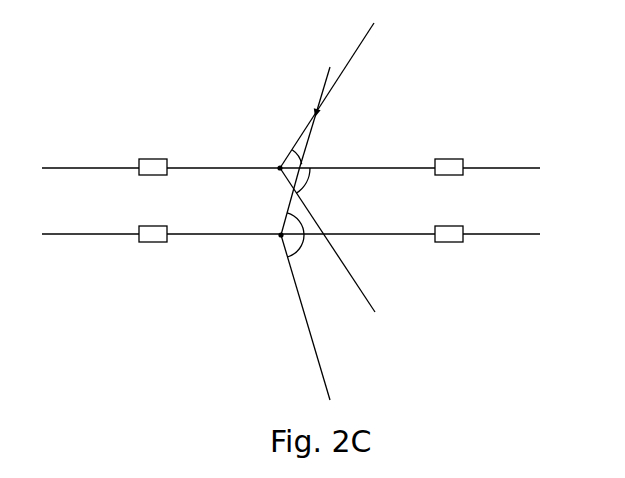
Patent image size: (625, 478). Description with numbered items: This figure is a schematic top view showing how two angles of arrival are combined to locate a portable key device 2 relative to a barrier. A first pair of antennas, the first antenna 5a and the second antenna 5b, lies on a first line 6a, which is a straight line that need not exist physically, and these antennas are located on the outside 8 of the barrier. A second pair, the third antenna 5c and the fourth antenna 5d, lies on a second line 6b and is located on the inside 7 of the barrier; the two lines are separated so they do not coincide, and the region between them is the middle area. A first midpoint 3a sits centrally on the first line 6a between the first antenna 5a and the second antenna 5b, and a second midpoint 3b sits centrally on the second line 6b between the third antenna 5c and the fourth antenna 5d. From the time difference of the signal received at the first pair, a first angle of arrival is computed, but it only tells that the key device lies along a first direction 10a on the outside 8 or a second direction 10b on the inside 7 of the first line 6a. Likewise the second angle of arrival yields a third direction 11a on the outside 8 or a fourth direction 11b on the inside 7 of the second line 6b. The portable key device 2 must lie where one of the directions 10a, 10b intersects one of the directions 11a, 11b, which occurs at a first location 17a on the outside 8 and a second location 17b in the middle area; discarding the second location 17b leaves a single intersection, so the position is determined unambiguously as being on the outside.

The portable key device 2 is at (320, 113).
The first midpoint 3a is at (277, 166).
The second midpoint 3b is at (280, 238).
The first antenna 5a is at (152, 158).
The second antenna 5b is at (449, 158).
The third antenna 5c is at (152, 243).
The fourth antenna 5d is at (449, 243).
The first line 6a is at (511, 167).
The second line 6b is at (514, 235).
The inside 7 is at (516, 335).
The outside 8 is at (509, 25).
The first direction 10a is at (367, 37).
The second direction 10b is at (334, 250).
The third direction 11a is at (329, 69).
The fourth direction 11b is at (312, 336).
The first location 17a is at (313, 110).
The second location 17b is at (292, 189).